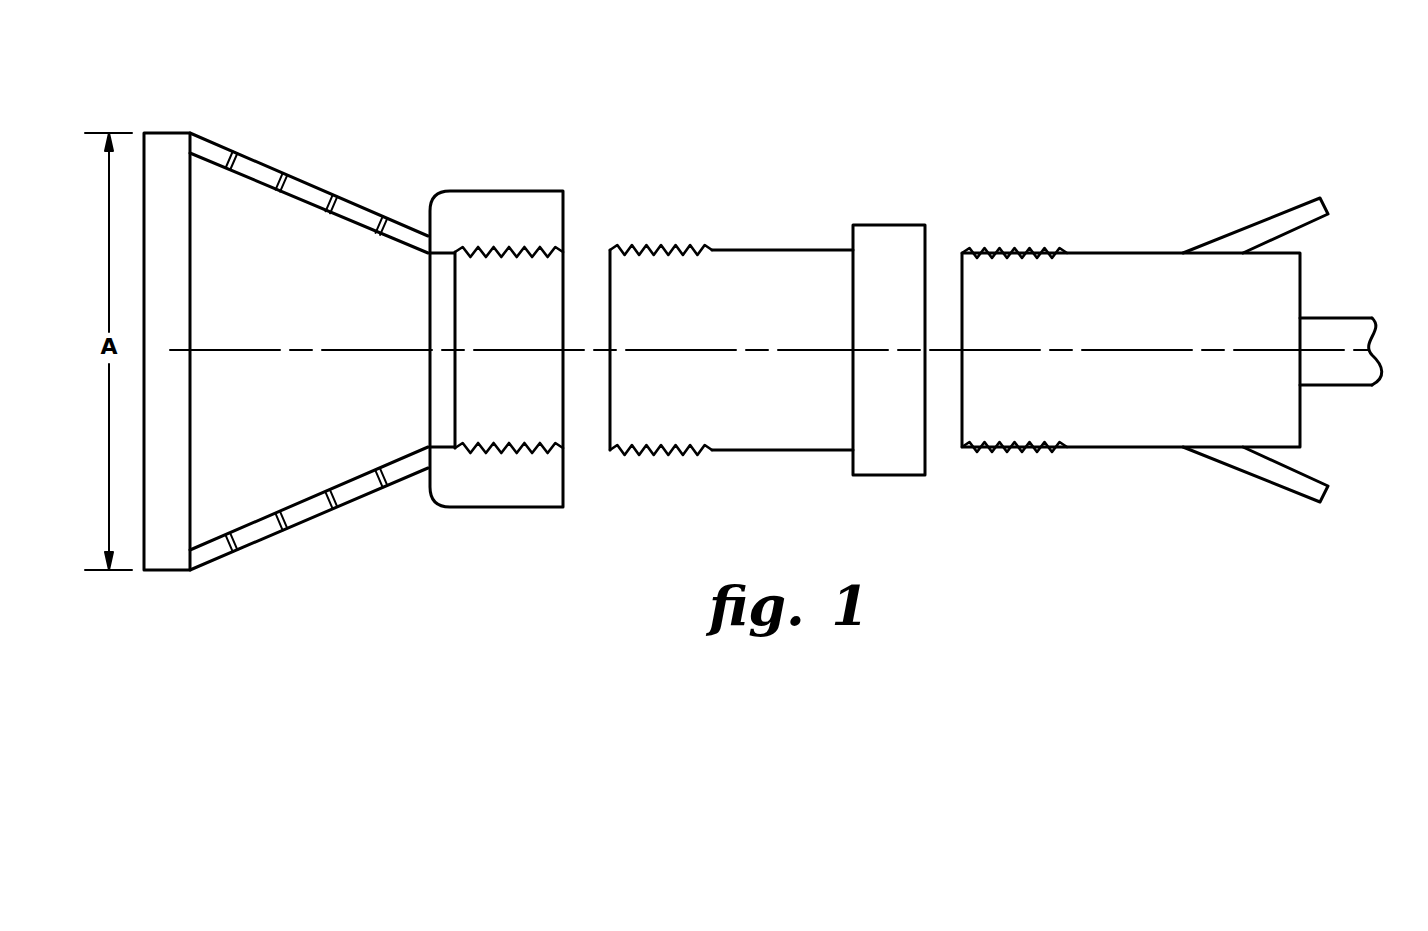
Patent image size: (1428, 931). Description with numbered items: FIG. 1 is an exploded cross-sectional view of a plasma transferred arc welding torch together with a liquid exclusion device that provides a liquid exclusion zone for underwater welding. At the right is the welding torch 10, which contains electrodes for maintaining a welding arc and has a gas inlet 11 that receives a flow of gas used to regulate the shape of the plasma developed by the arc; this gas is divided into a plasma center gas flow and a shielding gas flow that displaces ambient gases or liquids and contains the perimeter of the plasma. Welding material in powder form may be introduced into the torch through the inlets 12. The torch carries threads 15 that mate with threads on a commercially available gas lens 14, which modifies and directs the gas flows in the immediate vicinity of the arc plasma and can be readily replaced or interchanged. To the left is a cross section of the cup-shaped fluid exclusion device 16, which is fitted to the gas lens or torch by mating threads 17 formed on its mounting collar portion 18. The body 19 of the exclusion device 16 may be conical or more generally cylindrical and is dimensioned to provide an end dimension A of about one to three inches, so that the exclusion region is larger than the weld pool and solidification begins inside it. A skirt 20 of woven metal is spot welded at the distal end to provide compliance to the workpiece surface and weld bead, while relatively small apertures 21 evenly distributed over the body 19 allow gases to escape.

The welding torch 10 is at (1131, 215).
The gas inlet 11 is at (1337, 318).
The inlets 12 is at (1275, 210).
The gas lens 14 is at (806, 250).
The threads 15 is at (1005, 252).
The fluid exclusion device 16 is at (373, 172).
The mating threads 17 is at (520, 258).
The mounting collar portion 18 is at (487, 200).
The body 19 is at (268, 165).
The skirt 20 is at (166, 133).
The apertures 21 is at (240, 553).